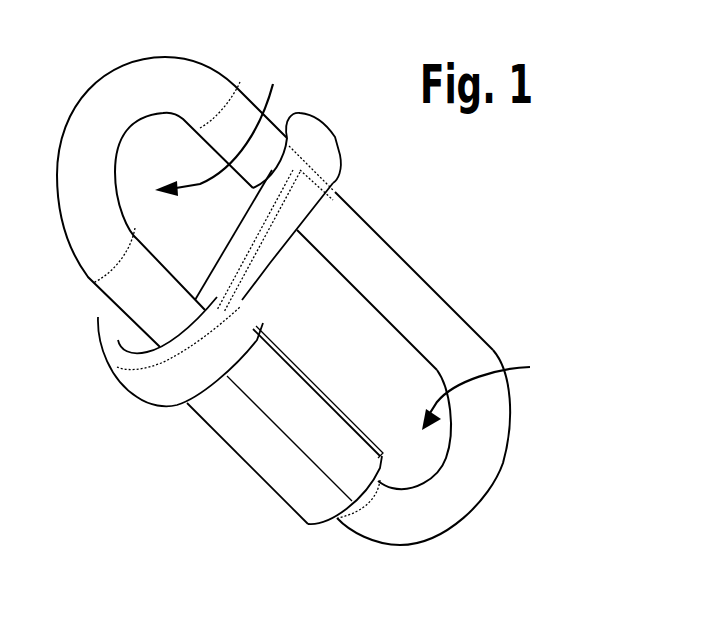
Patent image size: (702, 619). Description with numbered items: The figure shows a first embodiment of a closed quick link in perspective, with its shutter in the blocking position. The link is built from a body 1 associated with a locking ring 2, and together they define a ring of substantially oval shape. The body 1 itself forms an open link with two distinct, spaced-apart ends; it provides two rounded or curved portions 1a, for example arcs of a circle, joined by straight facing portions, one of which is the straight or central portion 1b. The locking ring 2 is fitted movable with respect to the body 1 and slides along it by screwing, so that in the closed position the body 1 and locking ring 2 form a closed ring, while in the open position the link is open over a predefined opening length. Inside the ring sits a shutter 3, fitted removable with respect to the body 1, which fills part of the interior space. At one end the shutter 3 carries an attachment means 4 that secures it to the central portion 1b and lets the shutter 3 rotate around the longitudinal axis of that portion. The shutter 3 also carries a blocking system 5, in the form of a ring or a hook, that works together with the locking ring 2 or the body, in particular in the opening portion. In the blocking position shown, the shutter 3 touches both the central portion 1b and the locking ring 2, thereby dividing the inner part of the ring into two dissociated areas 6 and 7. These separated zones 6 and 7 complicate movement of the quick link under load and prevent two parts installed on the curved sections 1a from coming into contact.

The body 1 is at (320, 273).
The curved portion 1a is at (183, 98).
The straight portion 1b is at (415, 317).
The locking ring 2 is at (287, 463).
The shutter 3 is at (270, 262).
The attachment means 4 is at (320, 160).
The blocking system 5 is at (180, 383).
The dissociated area 6 is at (220, 122).
The dissociated area 7 is at (485, 392).